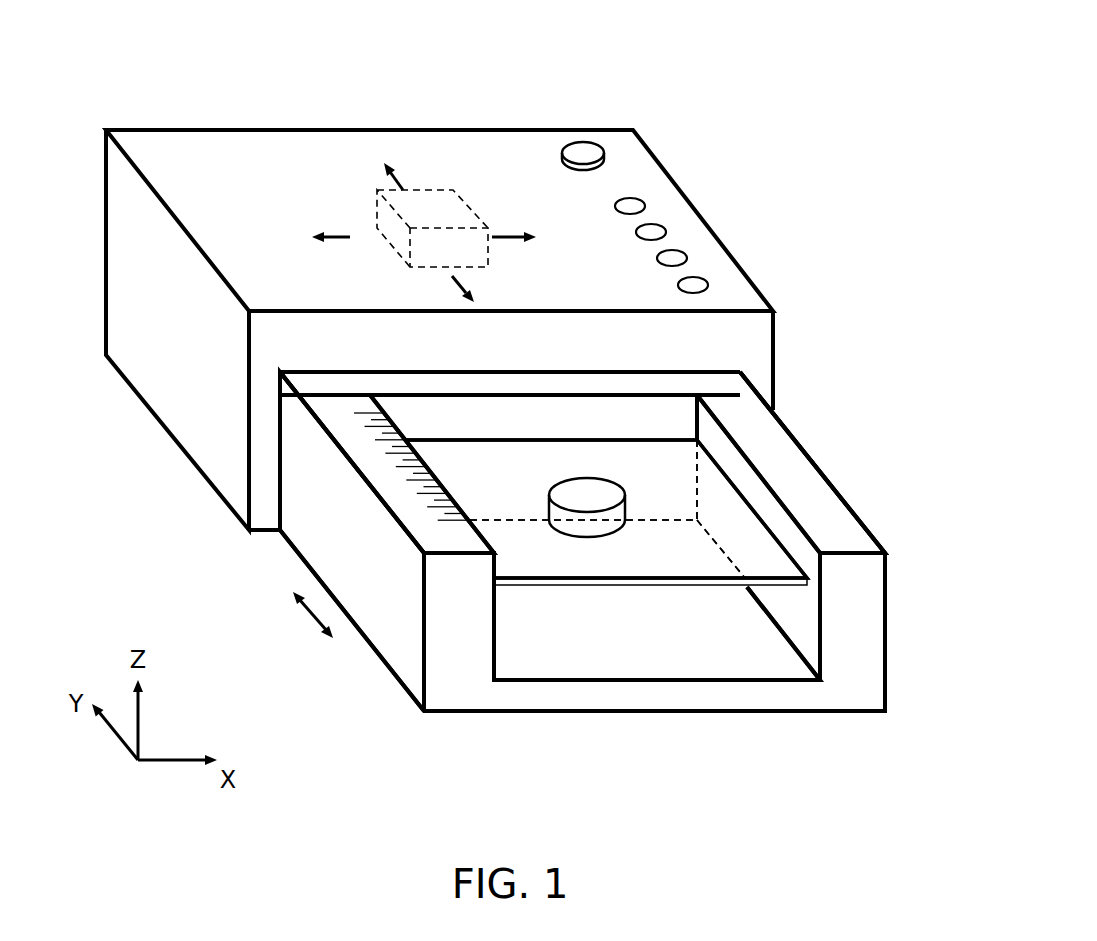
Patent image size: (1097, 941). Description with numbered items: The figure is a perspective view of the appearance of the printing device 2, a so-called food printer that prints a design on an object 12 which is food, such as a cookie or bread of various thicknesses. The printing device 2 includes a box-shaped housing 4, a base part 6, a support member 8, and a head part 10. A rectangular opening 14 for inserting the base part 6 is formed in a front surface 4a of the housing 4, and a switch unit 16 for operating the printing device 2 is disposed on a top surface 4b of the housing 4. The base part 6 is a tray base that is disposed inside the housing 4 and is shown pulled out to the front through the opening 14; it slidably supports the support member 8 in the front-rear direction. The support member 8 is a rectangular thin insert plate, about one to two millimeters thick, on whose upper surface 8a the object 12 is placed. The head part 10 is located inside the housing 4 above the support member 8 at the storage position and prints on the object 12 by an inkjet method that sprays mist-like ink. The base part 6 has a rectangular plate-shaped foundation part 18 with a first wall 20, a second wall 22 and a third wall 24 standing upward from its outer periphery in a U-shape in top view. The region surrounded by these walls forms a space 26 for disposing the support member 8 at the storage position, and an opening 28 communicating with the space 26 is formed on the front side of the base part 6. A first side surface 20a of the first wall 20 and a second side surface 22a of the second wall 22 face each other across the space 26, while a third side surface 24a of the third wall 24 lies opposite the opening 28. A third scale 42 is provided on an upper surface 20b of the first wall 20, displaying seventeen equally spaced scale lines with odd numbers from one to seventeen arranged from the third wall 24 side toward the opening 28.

The printing device 2 is at (670, 76).
The housing 4 is at (128, 280).
The front surface 4a is at (750, 343).
The top surface 4b is at (248, 145).
The base part 6 is at (887, 622).
The support member 8 is at (683, 568).
The upper surface 8a is at (534, 570).
The head part 10 is at (437, 190).
The object 12 is at (592, 528).
The opening 14 is at (717, 372).
The switch unit 16 is at (614, 158).
The foundation part 18 is at (737, 657).
The first wall 20 is at (332, 553).
The first side surface 20a is at (502, 609).
The upper surface 20b is at (325, 400).
The second wall 22 is at (818, 503).
The second side surface 22a is at (810, 572).
The third wall 24 is at (535, 390).
The third side surface 24a is at (584, 405).
The space 26 is at (629, 627).
The opening 28 is at (776, 676).
The third scale 42 is at (372, 484).